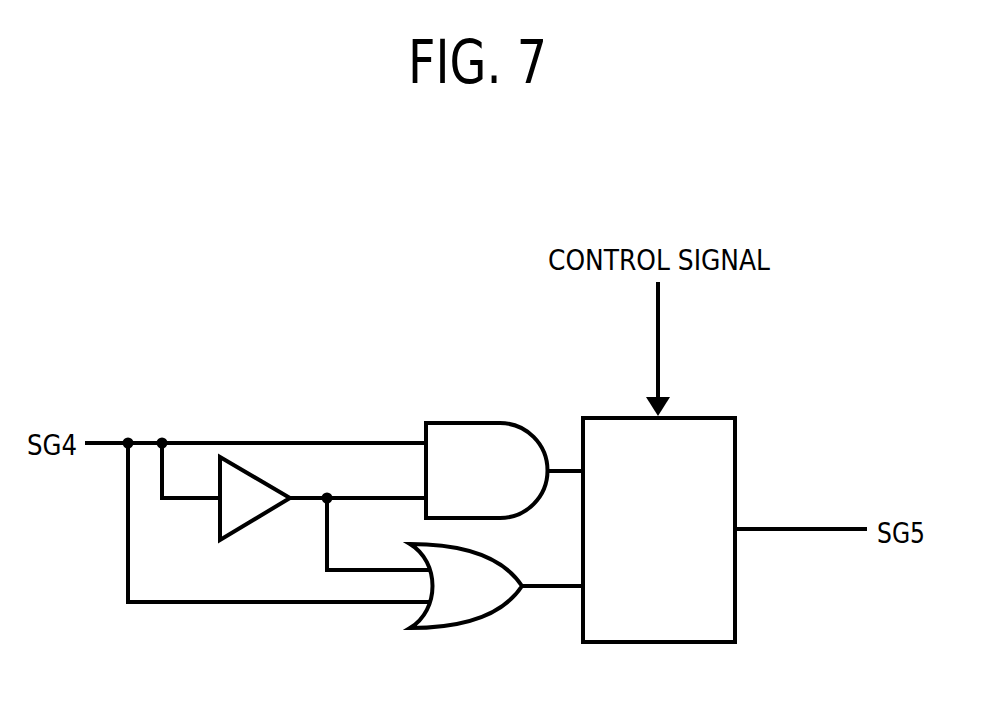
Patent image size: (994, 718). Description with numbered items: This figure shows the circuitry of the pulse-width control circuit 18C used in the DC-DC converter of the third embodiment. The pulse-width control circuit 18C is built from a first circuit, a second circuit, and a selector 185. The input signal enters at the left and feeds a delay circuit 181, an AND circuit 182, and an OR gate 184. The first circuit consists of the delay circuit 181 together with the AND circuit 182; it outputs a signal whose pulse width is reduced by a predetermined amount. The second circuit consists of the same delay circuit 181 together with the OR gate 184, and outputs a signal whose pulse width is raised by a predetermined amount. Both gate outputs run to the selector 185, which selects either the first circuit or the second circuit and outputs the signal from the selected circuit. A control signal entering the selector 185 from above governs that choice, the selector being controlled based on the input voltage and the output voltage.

The delay circuit 181 is at (252, 519).
The AND circuit 182 is at (453, 423).
The OR gate 184 is at (450, 628).
The selector 185 is at (690, 418).
The pulse-width control circuit 18C is at (780, 346).